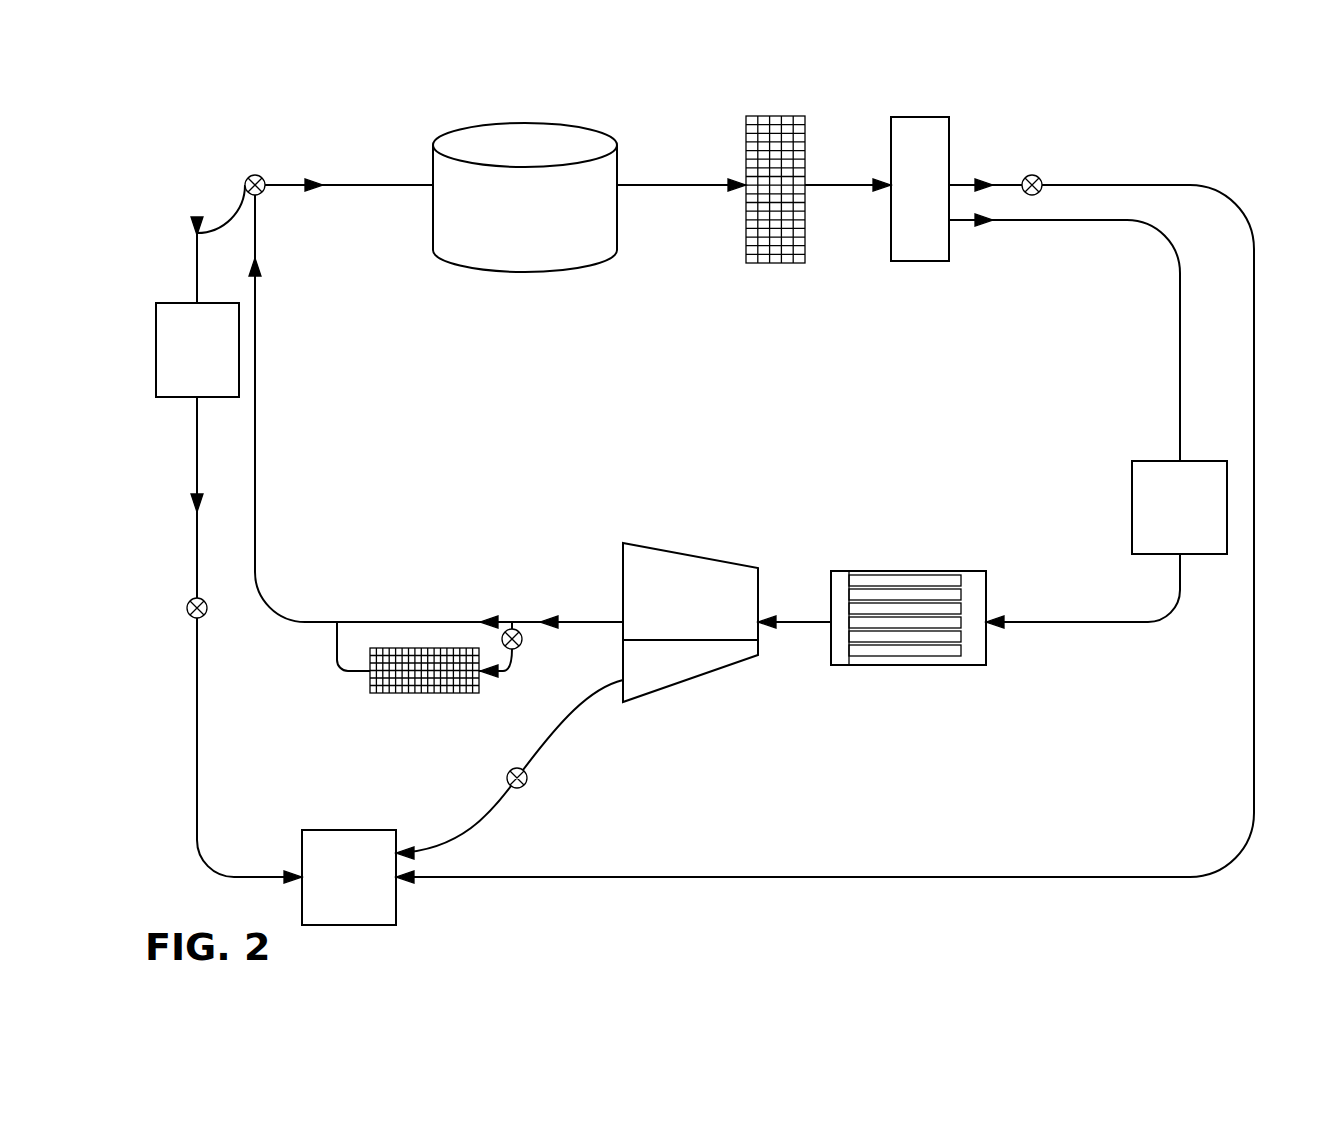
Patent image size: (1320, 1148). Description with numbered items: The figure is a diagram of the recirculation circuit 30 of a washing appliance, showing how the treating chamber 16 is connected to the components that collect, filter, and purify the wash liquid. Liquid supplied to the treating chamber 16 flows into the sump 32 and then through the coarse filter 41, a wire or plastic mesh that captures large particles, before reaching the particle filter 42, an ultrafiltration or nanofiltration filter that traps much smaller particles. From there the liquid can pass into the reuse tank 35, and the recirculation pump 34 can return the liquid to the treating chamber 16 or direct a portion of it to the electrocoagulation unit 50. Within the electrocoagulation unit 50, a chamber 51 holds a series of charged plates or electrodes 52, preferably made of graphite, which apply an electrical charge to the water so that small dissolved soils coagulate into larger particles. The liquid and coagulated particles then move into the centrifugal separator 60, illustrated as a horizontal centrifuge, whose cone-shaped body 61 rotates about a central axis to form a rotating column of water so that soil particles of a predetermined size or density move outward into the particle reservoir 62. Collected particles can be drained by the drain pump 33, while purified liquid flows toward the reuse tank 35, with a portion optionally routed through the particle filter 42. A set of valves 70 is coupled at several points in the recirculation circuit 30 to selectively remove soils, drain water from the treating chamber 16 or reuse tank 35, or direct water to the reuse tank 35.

The recirculation circuit 30 is at (160, 66).
The treating chamber 16 is at (511, 216).
The coarse filter 41 is at (771, 115).
The particle filter 42 is at (460, 693).
The sump 32 is at (906, 200).
The drain pump 33 is at (336, 890).
The recirculation pump 34 is at (1168, 520).
The reuse tank 35 is at (185, 366).
The electrocoagulation unit 50 is at (864, 564).
The chamber 51 is at (840, 587).
The electrodes 52 is at (925, 580).
The centrifugal separator 60 is at (655, 596).
The cone-shaped body 61 is at (690, 553).
The particle reservoir 62 is at (690, 658).
The valves 70 is at (256, 173).